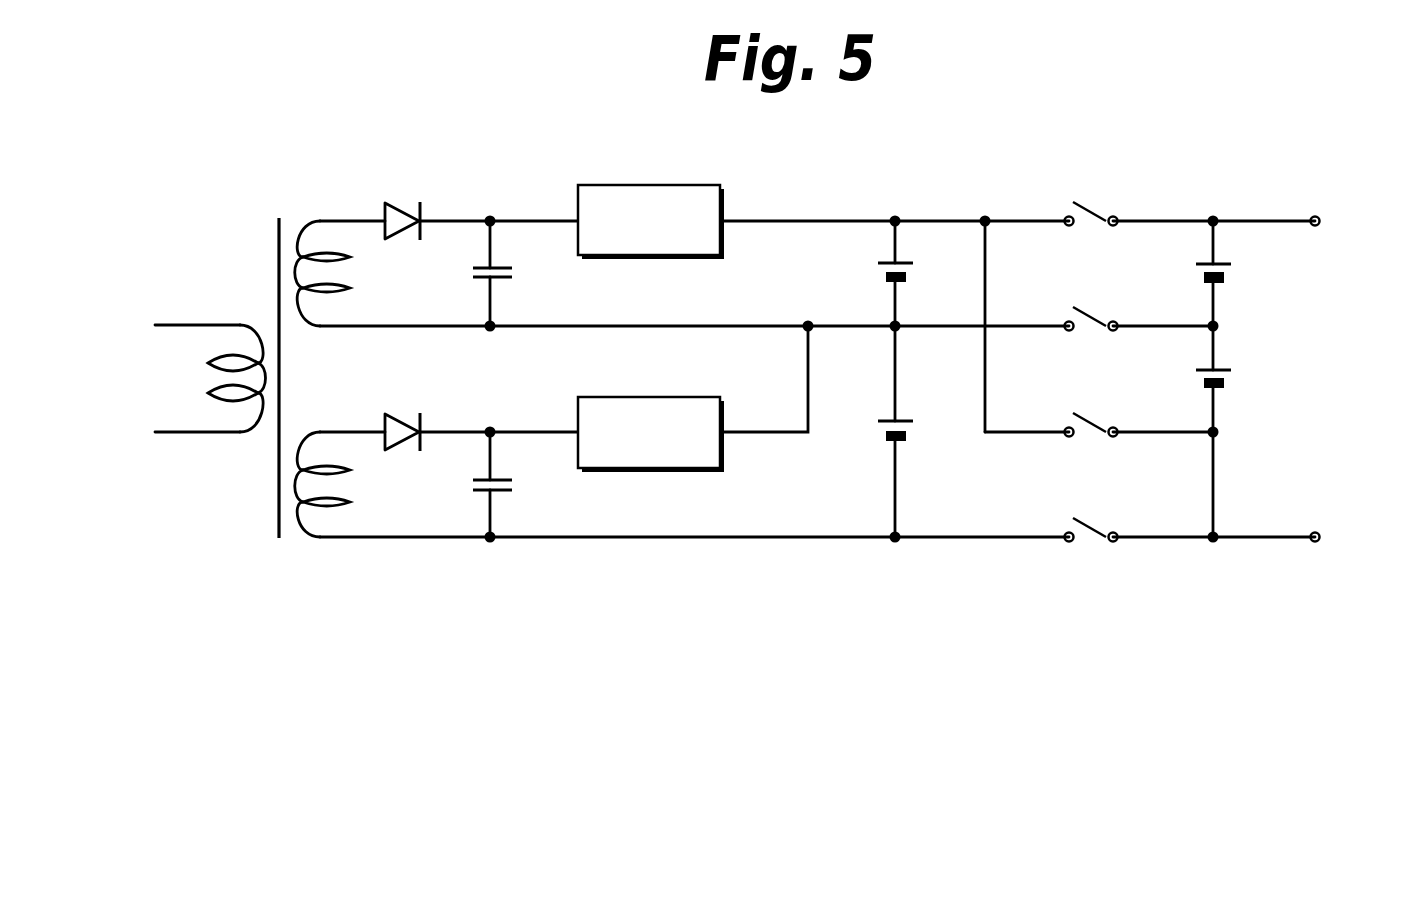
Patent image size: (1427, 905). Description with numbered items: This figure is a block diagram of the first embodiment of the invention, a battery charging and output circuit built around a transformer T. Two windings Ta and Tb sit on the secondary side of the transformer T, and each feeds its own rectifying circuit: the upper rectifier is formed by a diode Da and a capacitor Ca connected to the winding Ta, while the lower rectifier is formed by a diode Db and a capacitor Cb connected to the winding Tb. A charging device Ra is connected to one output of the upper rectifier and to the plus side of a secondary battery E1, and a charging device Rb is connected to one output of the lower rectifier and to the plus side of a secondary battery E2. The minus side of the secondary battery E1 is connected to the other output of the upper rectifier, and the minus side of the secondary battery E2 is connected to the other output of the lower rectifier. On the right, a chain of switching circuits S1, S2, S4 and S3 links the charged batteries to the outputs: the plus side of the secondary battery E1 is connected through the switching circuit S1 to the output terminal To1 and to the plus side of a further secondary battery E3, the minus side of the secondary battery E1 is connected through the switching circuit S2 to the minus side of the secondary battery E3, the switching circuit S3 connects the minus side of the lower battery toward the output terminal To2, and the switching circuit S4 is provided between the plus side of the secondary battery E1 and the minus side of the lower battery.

The transformer T is at (277, 200).
The winding Ta is at (329, 200).
The winding Tb is at (347, 415).
The diode Da is at (399, 200).
The diode Db is at (399, 415).
The capacitor Ca is at (472, 272).
The capacitor Cb is at (472, 485).
The charging device Ra is at (630, 184).
The charging device Rb is at (630, 396).
The secondary battery E1 is at (878, 272).
The secondary battery E2 is at (880, 432).
The secondary battery E3 is at (1232, 273).
The switching circuit S1 is at (1090, 202).
The switching circuit S2 is at (1090, 307).
The switching circuit S3 is at (1090, 520).
The switching circuit S4 is at (1090, 413).
The output terminal To1 is at (1322, 221).
The output terminal To2 is at (1322, 537).